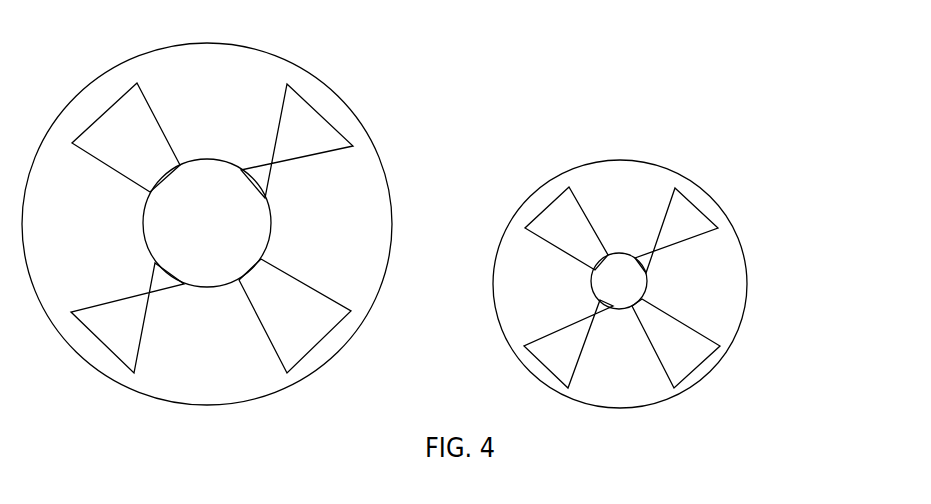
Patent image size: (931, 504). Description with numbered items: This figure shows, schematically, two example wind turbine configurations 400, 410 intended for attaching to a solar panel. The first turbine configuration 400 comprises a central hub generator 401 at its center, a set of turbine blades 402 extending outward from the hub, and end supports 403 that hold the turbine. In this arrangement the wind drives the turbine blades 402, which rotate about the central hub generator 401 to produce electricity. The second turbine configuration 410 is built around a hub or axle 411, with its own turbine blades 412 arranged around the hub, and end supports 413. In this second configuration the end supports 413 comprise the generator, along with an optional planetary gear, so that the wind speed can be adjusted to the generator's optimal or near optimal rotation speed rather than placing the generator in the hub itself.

The wind turbine configuration 400 is at (247, 220).
The central hub generator 401 is at (224, 240).
The turbine blades 402 is at (307, 330).
The end supports 403 is at (340, 240).
The wind turbine configuration 410 is at (666, 256).
The hub or axle 411 is at (638, 293).
The turbine blades 412 is at (698, 358).
The end supports 413 is at (723, 293).